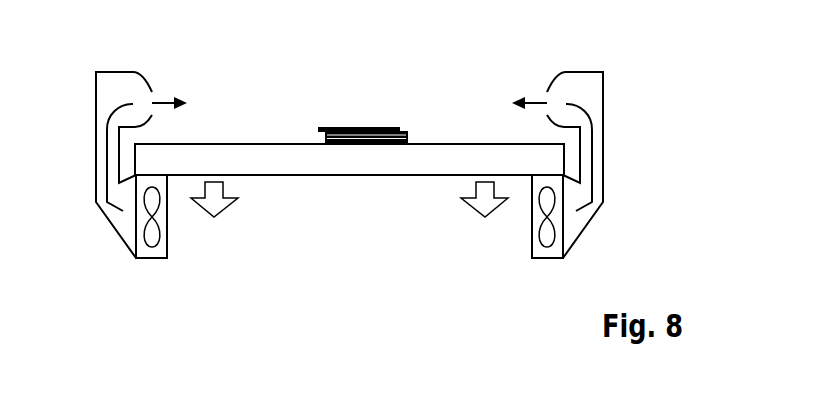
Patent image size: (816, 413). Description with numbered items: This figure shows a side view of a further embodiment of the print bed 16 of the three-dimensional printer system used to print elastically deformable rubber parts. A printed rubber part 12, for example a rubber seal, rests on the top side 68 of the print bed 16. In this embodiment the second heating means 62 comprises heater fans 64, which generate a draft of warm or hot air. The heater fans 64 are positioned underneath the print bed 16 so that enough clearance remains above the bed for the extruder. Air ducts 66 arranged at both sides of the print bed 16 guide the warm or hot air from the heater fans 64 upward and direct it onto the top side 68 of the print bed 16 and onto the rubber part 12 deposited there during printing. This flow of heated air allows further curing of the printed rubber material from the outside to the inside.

The rubber part 12 is at (416, 126).
The print bed 16 is at (345, 188).
The top side 68 is at (297, 140).
The air duct 66 is at (96, 110).
The second heating means 62 is at (349, 221).
The heater fan 64 is at (172, 234).